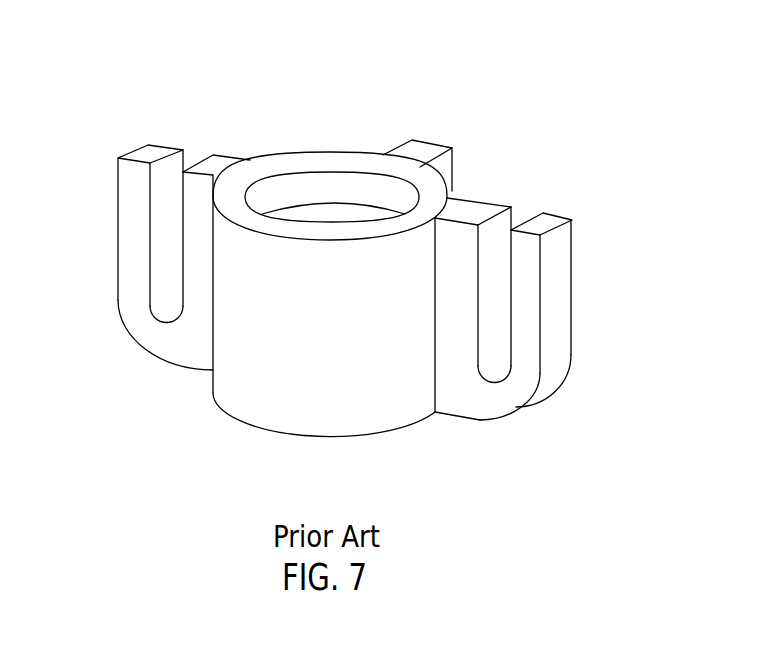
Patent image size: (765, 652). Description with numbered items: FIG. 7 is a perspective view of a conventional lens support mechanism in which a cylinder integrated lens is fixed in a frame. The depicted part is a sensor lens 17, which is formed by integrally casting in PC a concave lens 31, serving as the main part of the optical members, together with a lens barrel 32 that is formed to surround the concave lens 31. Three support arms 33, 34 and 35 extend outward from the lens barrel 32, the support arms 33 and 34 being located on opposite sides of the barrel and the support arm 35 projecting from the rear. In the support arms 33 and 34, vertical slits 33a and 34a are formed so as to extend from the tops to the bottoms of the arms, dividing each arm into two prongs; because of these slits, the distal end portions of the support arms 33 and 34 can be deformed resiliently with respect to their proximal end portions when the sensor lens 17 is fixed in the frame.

The sensor lens 17 is at (340, 252).
The concave lens 31 is at (312, 210).
The lens barrel 32 is at (252, 407).
The support arm 33 is at (141, 213).
The vertical slit 33a is at (167, 172).
The support arm 34 is at (541, 275).
The vertical slit 34a is at (493, 227).
The support arm 35 is at (426, 150).